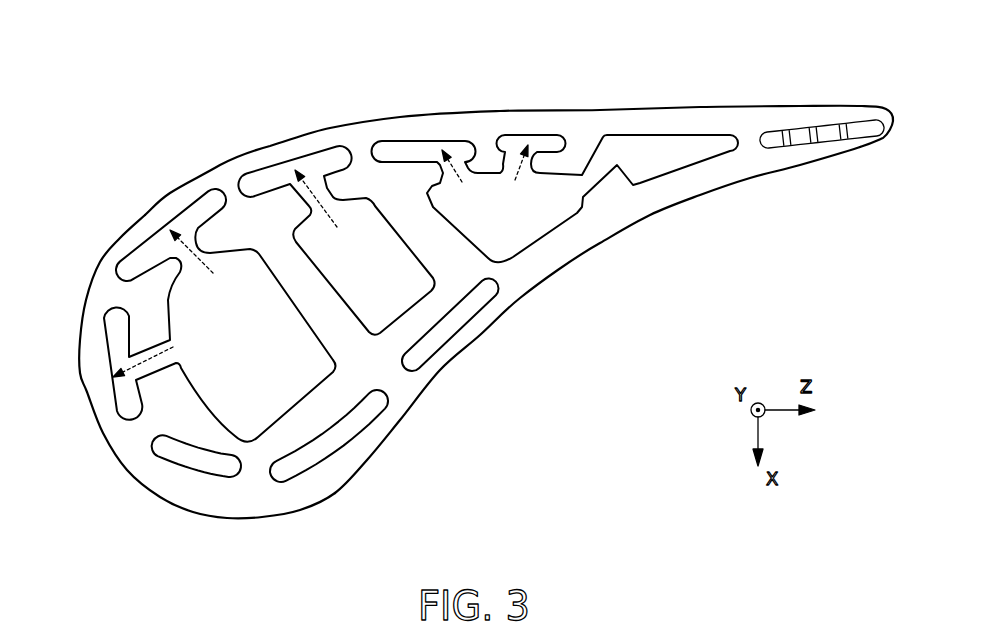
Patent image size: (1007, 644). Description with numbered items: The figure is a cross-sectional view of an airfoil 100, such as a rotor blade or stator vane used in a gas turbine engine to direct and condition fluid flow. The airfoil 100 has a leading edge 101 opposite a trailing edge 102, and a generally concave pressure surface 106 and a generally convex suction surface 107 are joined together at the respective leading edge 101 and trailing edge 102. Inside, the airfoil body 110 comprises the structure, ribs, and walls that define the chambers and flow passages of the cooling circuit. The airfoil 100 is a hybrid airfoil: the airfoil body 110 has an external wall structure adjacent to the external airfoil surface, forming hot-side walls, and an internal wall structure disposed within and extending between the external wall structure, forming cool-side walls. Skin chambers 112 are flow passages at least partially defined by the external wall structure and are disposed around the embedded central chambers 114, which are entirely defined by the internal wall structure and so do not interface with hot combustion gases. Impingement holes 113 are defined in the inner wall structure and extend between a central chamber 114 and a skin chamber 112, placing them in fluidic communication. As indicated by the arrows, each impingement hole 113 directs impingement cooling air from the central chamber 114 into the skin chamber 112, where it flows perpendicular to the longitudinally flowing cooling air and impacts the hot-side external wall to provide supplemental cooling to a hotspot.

The airfoil 100 is at (100, 78).
The leading edge 101 is at (128, 470).
The trailing edge 102 is at (888, 113).
The pressure surface 106 is at (520, 298).
The suction surface 107 is at (403, 113).
The airfoil body 110 is at (365, 126).
The skin chamber 112 is at (417, 148).
The impingement hole 113 is at (445, 78).
The central chamber 114 is at (266, 357).